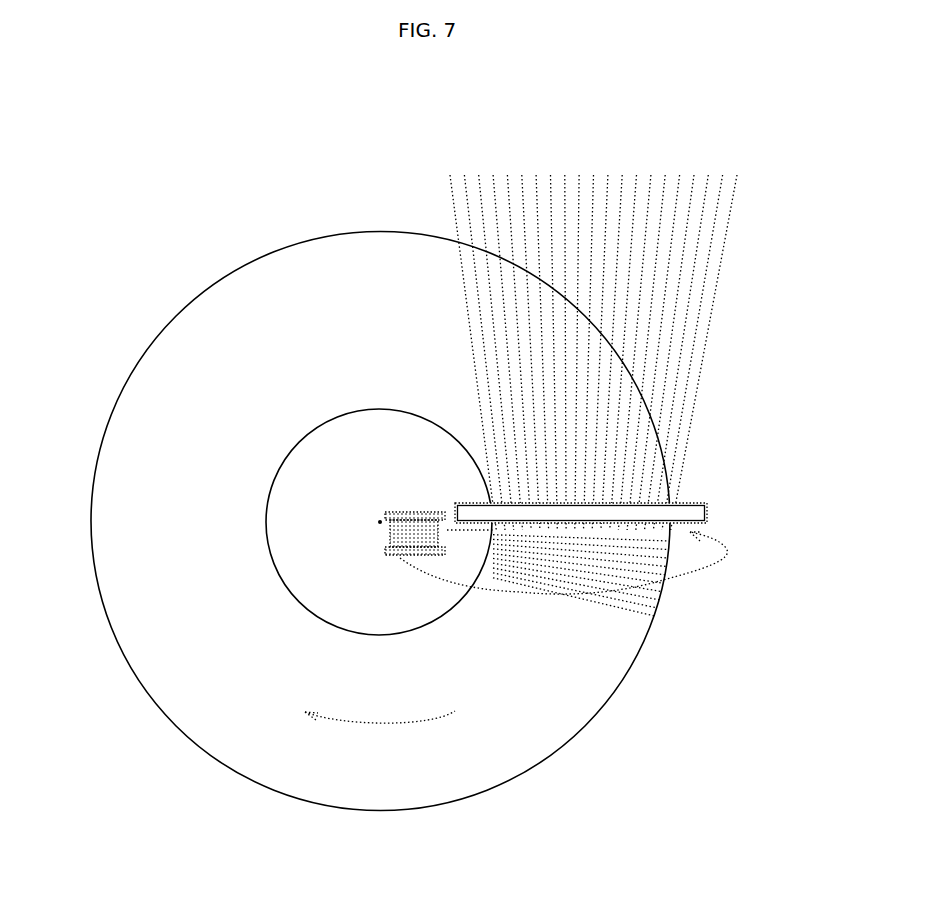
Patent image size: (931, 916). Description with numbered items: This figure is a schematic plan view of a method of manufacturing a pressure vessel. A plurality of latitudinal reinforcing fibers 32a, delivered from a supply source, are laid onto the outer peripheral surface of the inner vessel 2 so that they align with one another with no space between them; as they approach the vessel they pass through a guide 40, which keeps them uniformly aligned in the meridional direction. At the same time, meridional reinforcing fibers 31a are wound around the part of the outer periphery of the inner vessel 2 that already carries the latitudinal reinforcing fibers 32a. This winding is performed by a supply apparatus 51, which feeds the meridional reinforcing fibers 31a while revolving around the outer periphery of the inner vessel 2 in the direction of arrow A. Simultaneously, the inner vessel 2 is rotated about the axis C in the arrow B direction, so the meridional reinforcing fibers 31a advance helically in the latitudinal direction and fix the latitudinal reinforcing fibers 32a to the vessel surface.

The inner vessel 2 is at (135, 581).
The latitudinal reinforcing fibers 32a is at (710, 288).
The guide 40 is at (688, 503).
The meridional reinforcing fibers 31a is at (447, 530).
The supply apparatus 51 is at (397, 512).
The axis C is at (378, 523).
The arrow A is at (707, 588).
The arrow B direction B is at (389, 725).